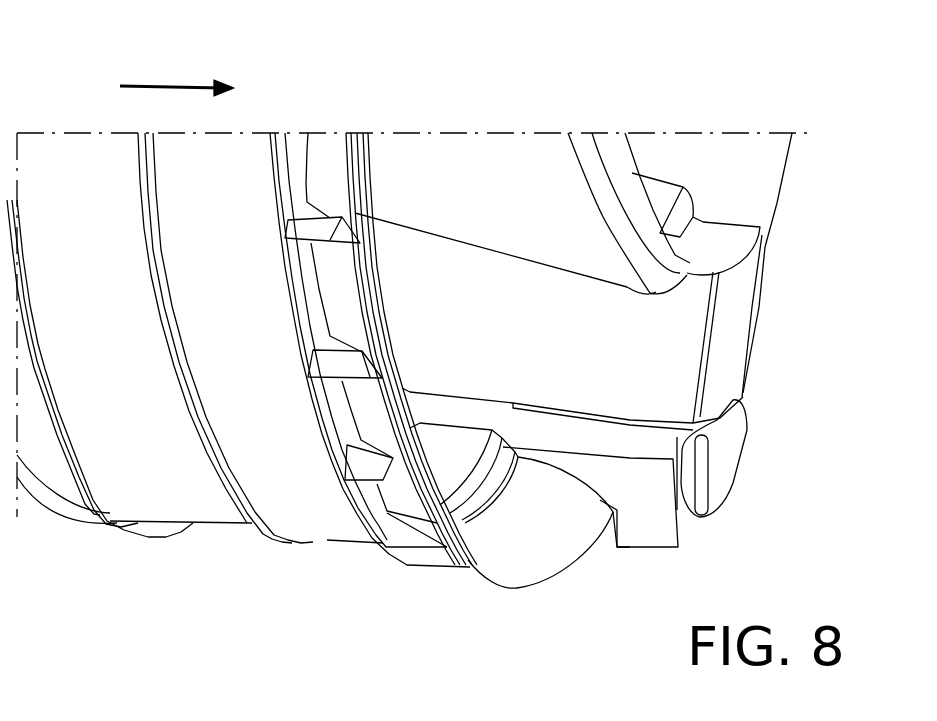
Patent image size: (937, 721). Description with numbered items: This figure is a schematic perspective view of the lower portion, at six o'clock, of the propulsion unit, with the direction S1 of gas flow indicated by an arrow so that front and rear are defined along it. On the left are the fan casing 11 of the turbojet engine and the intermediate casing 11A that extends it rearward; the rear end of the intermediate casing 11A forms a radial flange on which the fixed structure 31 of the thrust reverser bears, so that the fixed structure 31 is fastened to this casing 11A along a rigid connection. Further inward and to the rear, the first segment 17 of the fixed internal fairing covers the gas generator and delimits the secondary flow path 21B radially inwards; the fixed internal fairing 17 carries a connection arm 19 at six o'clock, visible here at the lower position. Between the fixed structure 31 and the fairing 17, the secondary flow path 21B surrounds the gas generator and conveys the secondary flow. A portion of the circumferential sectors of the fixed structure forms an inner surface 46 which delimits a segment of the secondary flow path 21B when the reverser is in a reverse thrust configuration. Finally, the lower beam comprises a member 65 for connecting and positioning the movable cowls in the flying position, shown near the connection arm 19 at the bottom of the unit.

The direction of gas flow S1 is at (165, 85).
The fan casing 11 is at (63, 490).
The intermediate casing 11A is at (255, 529).
The first segment of the fixed internal fairing 17 is at (633, 160).
The connection arm 19 is at (737, 317).
The secondary flow path 21B is at (533, 338).
The fixed structure 31 is at (443, 592).
The inner surface 46 is at (517, 515).
The member for connecting and positioning the movable cowls 65 is at (722, 462).